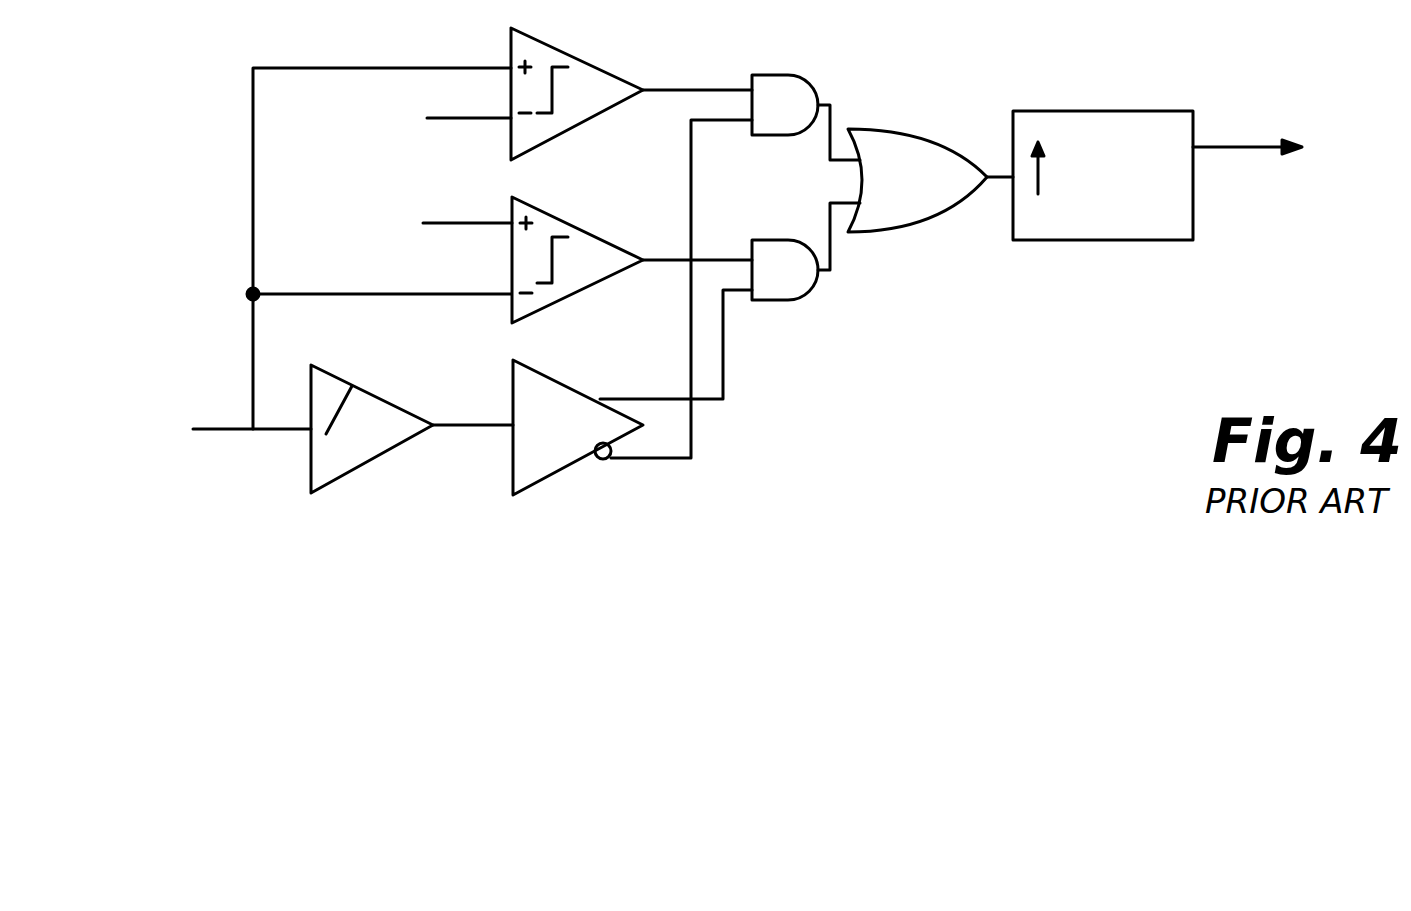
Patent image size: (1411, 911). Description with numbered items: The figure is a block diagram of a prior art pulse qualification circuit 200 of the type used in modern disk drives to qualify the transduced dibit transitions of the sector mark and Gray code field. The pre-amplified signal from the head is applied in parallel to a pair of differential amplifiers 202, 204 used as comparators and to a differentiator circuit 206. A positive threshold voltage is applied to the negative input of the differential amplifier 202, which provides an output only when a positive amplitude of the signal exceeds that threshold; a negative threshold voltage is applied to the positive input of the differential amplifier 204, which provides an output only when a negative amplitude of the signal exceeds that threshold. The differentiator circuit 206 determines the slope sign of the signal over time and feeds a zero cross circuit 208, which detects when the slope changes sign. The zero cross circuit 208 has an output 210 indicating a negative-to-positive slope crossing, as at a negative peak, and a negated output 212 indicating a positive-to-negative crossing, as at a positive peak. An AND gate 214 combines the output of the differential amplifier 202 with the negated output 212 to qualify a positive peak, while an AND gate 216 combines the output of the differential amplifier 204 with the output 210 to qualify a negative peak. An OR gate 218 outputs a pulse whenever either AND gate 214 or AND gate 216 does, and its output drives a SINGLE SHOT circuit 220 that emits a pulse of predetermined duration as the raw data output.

The qualification circuit 200 is at (878, 390).
The differential amplifier 202 is at (585, 62).
The differential amplifier 204 is at (573, 216).
The differentiator circuit 206 is at (345, 378).
The zero cross circuit 208 is at (530, 360).
The output 210 is at (612, 398).
The negated output 212 is at (672, 460).
The AND gate 214 is at (770, 75).
The AND gate 216 is at (808, 296).
The OR gate 218 is at (870, 128).
The SINGLE SHOT circuit 220 is at (1087, 111).